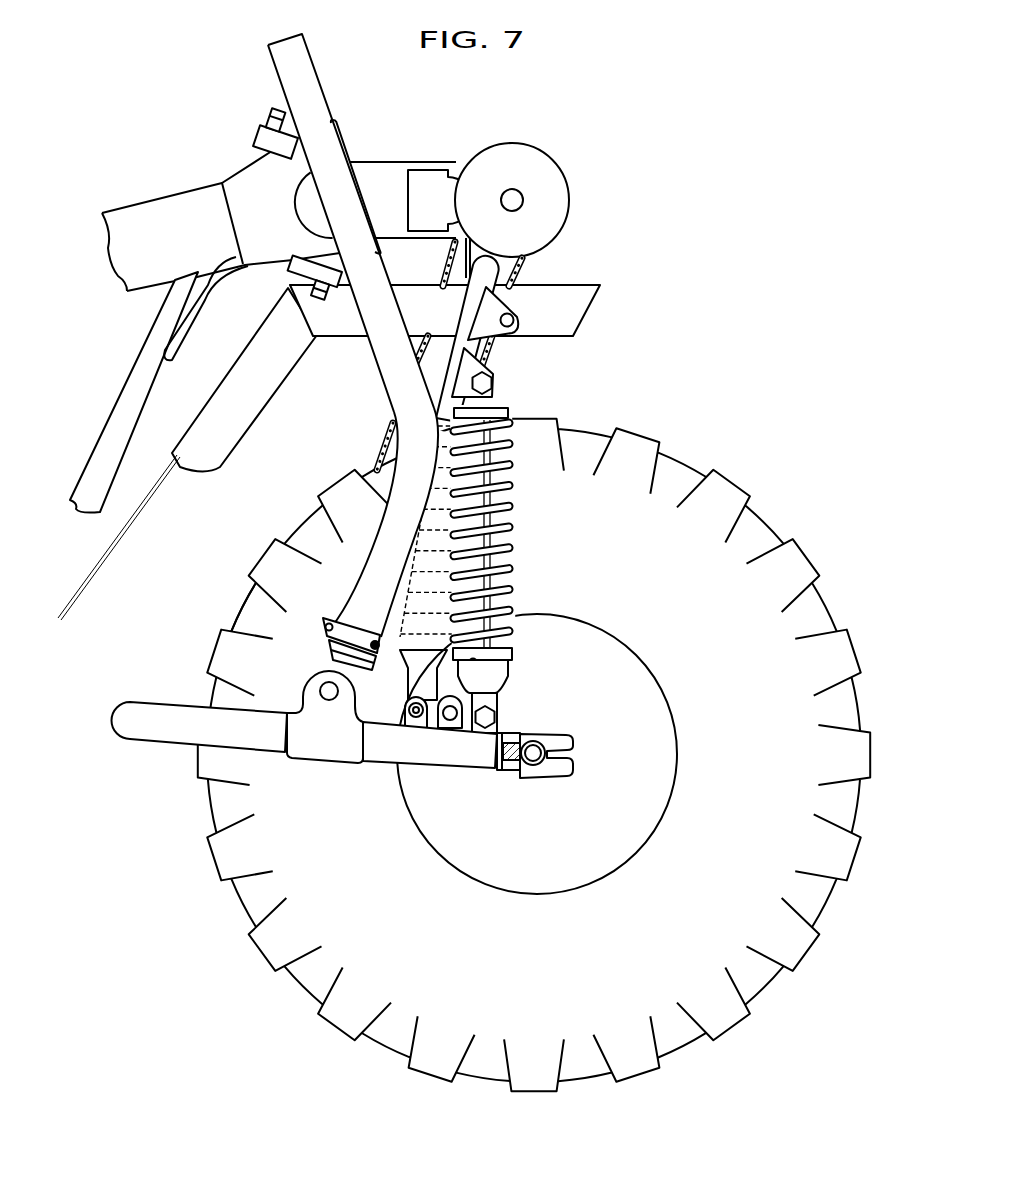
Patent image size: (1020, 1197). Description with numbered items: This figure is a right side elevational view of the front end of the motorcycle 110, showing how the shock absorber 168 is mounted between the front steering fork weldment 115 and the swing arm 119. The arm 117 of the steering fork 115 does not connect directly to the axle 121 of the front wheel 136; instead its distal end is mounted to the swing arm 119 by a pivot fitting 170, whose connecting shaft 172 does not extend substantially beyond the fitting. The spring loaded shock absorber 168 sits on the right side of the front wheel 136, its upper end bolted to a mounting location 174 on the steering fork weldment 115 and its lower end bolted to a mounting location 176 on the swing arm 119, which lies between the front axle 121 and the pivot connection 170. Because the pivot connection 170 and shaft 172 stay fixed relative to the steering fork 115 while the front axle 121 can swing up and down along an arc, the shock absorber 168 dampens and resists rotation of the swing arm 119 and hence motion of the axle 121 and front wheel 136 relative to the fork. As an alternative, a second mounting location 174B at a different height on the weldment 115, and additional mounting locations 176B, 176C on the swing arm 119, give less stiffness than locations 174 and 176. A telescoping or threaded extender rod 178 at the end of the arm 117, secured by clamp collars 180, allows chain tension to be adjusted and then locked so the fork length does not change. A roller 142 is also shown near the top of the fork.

The motorcycle 110 is at (142, 188).
The front steering fork weldment 115 is at (336, 148).
The arm of the steering fork 117 is at (377, 537).
The swing arm 119 is at (160, 733).
The front wheel axle 121 is at (543, 748).
The front wheel 136 is at (773, 528).
The roller 142 is at (553, 177).
The shock absorber 168 is at (520, 510).
The pivot fitting 170 is at (323, 756).
The shaft 172 is at (326, 688).
The upper mounting location 174 is at (492, 383).
The second mounting location 174B is at (497, 300).
The lower mounting location 176 is at (490, 712).
The additional mounting location 176B is at (452, 730).
The additional mounting location 176C is at (420, 724).
The extender rod 178 is at (240, 617).
The clamp collar 180 is at (338, 612).